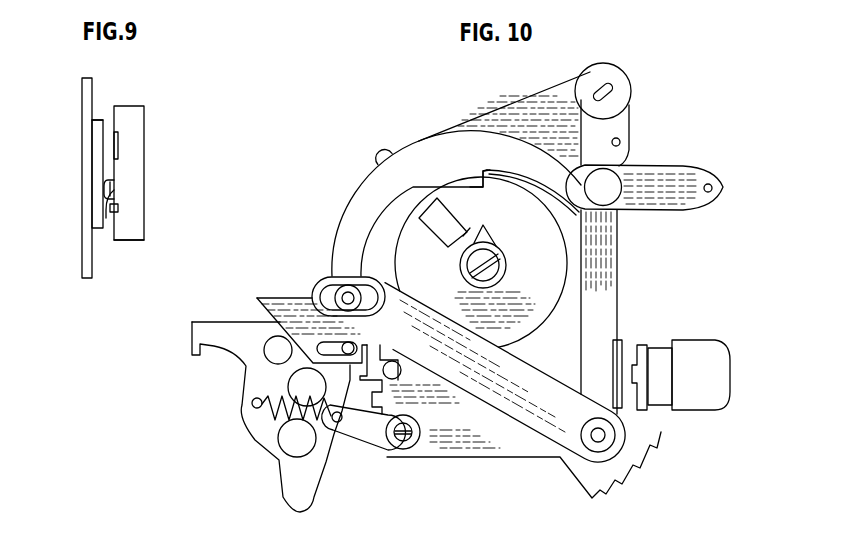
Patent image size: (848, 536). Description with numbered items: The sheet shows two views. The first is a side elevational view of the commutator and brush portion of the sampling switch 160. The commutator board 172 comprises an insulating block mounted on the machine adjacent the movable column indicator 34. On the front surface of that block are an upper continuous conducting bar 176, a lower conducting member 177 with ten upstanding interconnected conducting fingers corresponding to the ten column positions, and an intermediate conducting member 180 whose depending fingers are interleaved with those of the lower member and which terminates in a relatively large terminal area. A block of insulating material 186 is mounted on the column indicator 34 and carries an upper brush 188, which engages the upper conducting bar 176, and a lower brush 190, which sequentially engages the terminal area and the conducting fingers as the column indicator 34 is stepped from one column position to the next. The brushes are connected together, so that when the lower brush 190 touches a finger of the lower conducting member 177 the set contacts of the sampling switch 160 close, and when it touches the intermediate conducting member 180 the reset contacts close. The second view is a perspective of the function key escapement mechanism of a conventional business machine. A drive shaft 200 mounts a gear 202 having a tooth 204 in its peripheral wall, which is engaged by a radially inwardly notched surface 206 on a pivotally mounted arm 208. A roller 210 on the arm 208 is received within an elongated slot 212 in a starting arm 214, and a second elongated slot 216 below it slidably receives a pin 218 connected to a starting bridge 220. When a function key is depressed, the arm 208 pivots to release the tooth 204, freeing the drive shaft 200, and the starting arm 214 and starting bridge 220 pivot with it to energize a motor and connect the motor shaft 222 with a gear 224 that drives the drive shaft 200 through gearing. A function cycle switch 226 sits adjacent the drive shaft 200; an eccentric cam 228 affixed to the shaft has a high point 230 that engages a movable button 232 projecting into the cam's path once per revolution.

In FIG. 9, the column indicator 34 is at (83, 249).
In FIG. 9, the sampling switch 160 is at (102, 95).
In FIG. 9, the commutator board 172 is at (137, 99).
In FIG. 9, the upper continuous conducting bar 176 is at (157, 177).
In FIG. 9, the lower conducting member 177 is at (121, 208).
In FIG. 9, the intermediate conducting member 180 is at (124, 182).
In FIG. 9, the block of insulating material 186 is at (101, 163).
In FIG. 9, the upper brush 188 is at (108, 142).
In FIG. 9, the lower brush 190 is at (108, 216).
In FIG. 10, the drive shaft 200 is at (503, 266).
In FIG. 10, the gear 202 is at (611, 322).
In FIG. 10, the tooth 204 is at (517, 183).
In FIG. 10, the radially inwardly notched surface 206 is at (481, 176).
In FIG. 10, the arm 208 is at (651, 173).
In FIG. 10, the roller 210 is at (338, 288).
In FIG. 10, the elongated slot 212 is at (311, 283).
In FIG. 10, the starting arm 214 is at (502, 375).
In FIG. 10, the second elongated slot 216 is at (340, 345).
In FIG. 10, the pin 218 is at (372, 347).
In FIG. 10, the starting bridge 220 is at (227, 335).
In FIG. 10, the motor shaft 222 is at (698, 357).
In FIG. 10, the gear 224 is at (619, 343).
In FIG. 10, the function cycle switch 226 is at (435, 213).
In FIG. 10, the eccentric cam 228 is at (489, 243).
In FIG. 10, the high point 230 is at (477, 228).
In FIG. 10, the movable button 232 is at (464, 233).